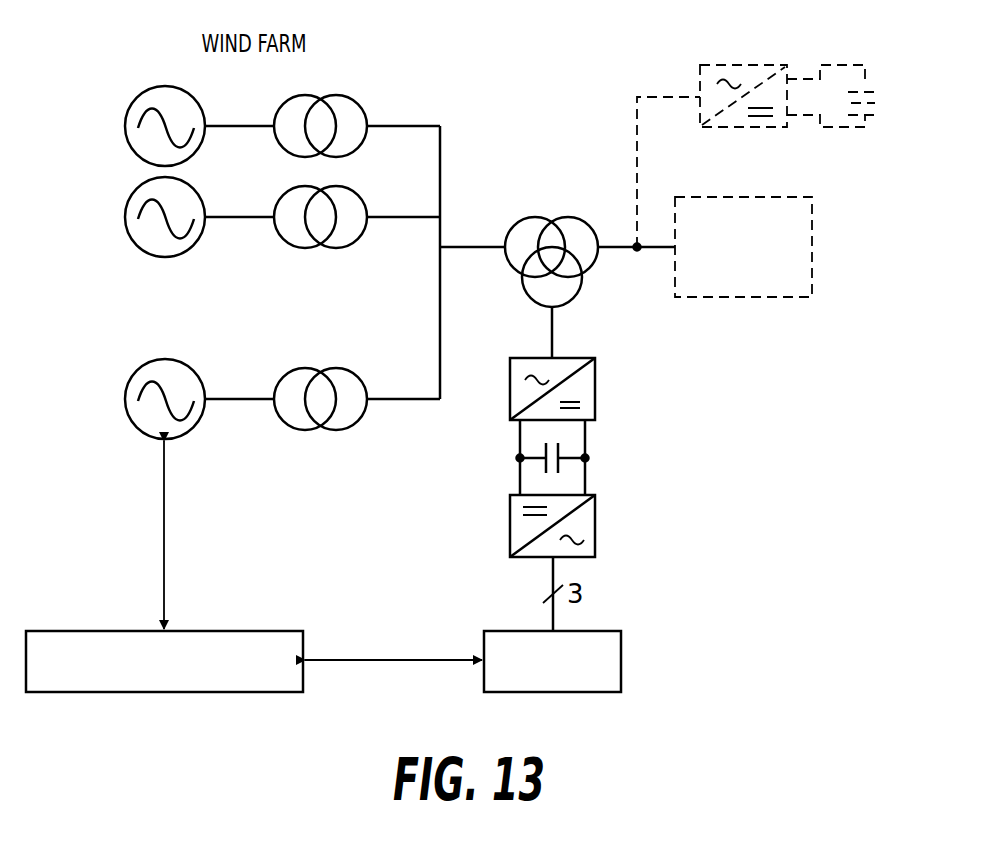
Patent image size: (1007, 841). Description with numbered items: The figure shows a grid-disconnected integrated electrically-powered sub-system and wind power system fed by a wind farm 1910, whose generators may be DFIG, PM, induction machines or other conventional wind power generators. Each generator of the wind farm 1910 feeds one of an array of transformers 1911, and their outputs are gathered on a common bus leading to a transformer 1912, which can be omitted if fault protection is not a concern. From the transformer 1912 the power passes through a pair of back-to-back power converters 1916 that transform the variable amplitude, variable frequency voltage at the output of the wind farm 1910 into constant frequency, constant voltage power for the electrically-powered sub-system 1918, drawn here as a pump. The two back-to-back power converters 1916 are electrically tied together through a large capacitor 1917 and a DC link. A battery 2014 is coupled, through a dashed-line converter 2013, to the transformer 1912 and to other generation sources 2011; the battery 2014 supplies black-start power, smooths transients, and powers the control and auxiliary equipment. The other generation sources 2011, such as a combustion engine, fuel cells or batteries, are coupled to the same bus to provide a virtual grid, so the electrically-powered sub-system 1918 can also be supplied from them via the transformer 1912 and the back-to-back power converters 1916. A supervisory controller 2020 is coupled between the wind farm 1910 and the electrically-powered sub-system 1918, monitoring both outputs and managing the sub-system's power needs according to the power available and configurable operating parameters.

The wind farm 1910 is at (125, 126).
The array of transformers 1911 is at (346, 96).
The transformer 1912 is at (566, 217).
The back-to-back power converters 1916 is at (597, 390).
The capacitor 1917 is at (560, 451).
The electrically-powered sub-system 1918 is at (622, 660).
The other generation sources 2011 is at (752, 197).
The AC/DC converter 2013 is at (745, 65).
The battery 2014 is at (868, 76).
The supervisory controller 2020 is at (228, 631).